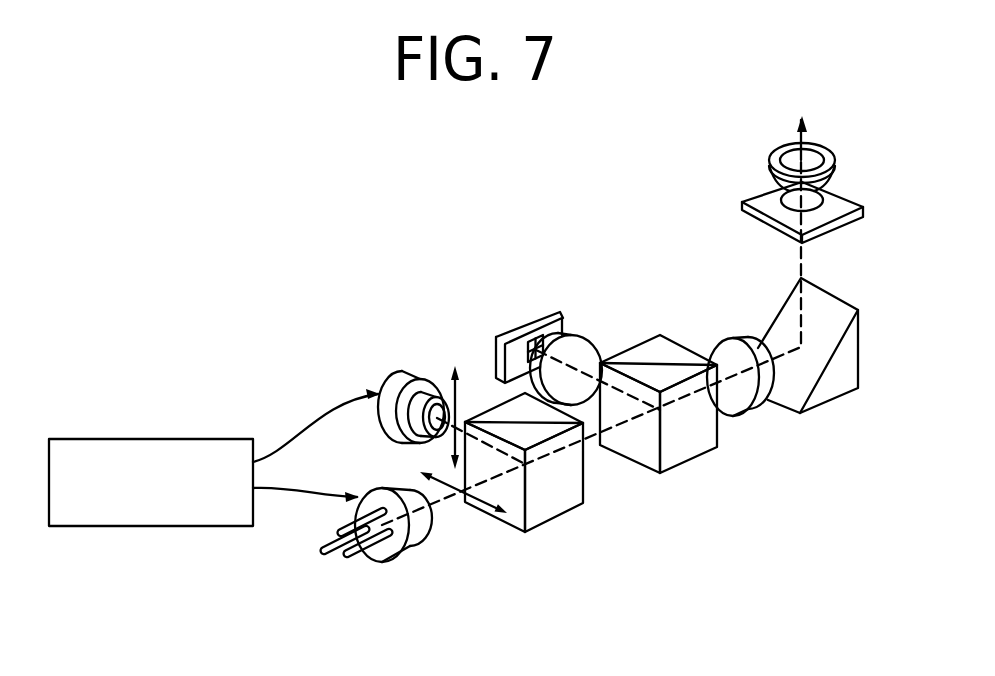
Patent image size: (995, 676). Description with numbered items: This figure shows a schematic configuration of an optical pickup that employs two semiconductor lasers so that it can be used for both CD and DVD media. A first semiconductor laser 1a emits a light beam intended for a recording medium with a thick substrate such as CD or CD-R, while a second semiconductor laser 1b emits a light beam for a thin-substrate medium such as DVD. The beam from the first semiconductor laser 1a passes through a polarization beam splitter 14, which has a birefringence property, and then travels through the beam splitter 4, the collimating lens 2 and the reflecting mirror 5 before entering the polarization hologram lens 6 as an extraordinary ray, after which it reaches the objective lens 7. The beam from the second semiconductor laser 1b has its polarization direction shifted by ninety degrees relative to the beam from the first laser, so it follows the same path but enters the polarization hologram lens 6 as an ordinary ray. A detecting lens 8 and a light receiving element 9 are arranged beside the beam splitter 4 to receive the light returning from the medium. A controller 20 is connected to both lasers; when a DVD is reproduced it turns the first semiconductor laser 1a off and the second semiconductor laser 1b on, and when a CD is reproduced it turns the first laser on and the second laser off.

The controller 20 is at (128, 440).
The first semiconductor laser 1a is at (417, 372).
The second semiconductor laser 1b is at (388, 565).
The polarization beam splitter 14 is at (548, 524).
The beam splitter 4 is at (690, 460).
The collimating lens 2 is at (753, 410).
The reflecting mirror 5 is at (846, 395).
The polarization hologram lens 6 is at (857, 218).
The objective lens 7 is at (835, 170).
The detecting lens 8 is at (578, 335).
The light receiving element 9 is at (557, 312).